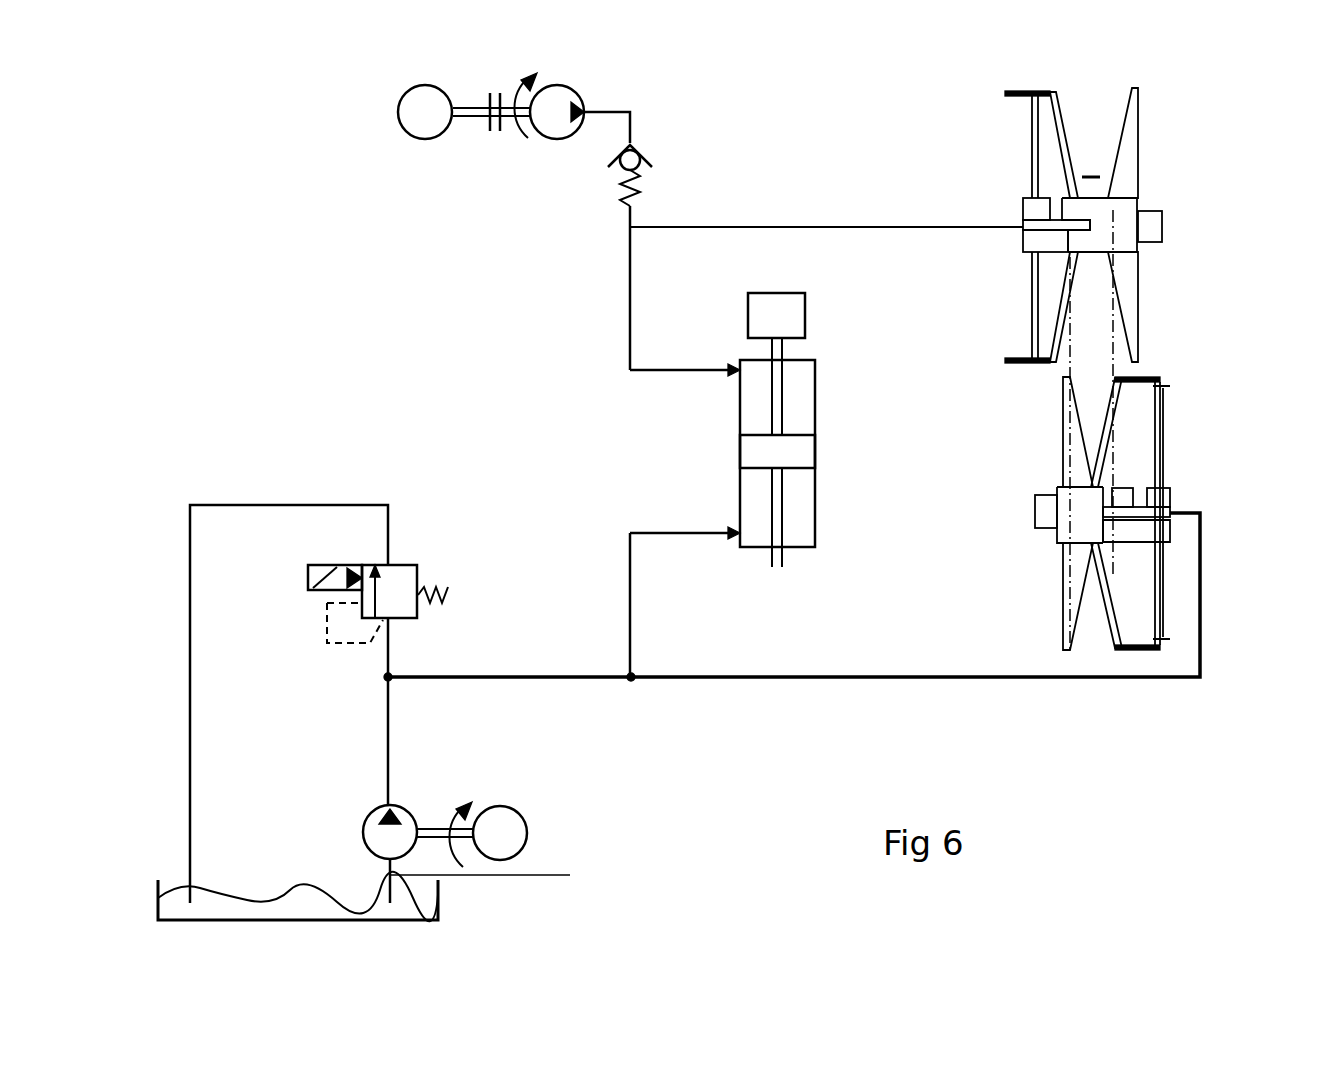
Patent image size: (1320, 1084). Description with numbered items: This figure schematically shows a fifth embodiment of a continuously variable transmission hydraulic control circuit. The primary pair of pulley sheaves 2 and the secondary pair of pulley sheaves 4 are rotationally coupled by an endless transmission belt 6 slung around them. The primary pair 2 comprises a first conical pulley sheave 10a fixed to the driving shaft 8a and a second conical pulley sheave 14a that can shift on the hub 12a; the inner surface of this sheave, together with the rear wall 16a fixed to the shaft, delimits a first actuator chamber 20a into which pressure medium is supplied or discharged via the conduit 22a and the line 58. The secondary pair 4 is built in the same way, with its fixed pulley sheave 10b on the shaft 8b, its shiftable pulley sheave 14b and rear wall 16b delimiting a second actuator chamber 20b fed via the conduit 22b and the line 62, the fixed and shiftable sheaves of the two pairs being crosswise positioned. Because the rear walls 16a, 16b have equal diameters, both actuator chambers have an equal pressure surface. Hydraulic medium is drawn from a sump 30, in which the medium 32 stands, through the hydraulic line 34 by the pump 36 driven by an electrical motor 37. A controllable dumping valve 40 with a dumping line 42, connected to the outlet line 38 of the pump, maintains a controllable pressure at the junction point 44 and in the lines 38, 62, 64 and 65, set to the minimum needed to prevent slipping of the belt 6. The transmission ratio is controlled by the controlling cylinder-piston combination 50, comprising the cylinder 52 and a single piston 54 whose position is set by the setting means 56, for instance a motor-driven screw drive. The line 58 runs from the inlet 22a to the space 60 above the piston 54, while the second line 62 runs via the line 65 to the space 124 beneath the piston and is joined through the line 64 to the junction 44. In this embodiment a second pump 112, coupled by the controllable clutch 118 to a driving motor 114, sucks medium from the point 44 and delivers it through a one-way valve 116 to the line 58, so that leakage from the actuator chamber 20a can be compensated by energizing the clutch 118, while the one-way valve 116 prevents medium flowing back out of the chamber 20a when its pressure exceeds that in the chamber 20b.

The primary pair of pulley sheaves 2 is at (1103, 328).
The secondary pair of pulley sheaves 4 is at (1129, 551).
The endless transmission belt 6 is at (1103, 368).
The driving shaft 8a is at (1155, 225).
The shaft of the secondary pair 8b is at (1042, 513).
The first conical pulley sheave 10a is at (1127, 173).
The fixed pulley sheave of the secondary pair 10b is at (1075, 473).
The hub 12a is at (1097, 240).
The second conical pulley sheave 14a is at (1062, 125).
The shiftable pulley sheave of the secondary pair 14b is at (1117, 650).
The rear wall 16a is at (1028, 192).
The rear wall of the secondary pair 16b is at (1168, 440).
The first actuator chamber 20a is at (1048, 153).
The second actuator chamber 20b is at (1140, 628).
The conduit 22a is at (1055, 228).
The conduit of the secondary pair 22b is at (1145, 512).
The sump 30 is at (440, 912).
The hydraulic fluid 32 is at (292, 903).
The hydraulic line 34 is at (488, 865).
The pump 36 is at (400, 833).
The electrical motor 37 is at (512, 818).
The outlet line 38 is at (390, 735).
The controllable dumping valve 40 is at (402, 582).
The dumping line 42 is at (190, 680).
The junction point 44 is at (390, 673).
The controlling cylinder-piston combination 50 is at (763, 419).
The cylinder 52 is at (817, 403).
The single piston 54 is at (775, 448).
The setting means 56 is at (788, 318).
The hydraulic line 58 is at (815, 225).
The space above the piston 60 is at (755, 400).
The second hydraulic line 62 is at (802, 678).
The line 64 is at (572, 678).
The line 65 is at (635, 615).
The second pump 112 is at (560, 132).
The driving motor 114 is at (400, 125).
The one-way valve 116 is at (648, 183).
The controllable clutch 118 is at (490, 128).
The lower chamber 124 is at (803, 530).